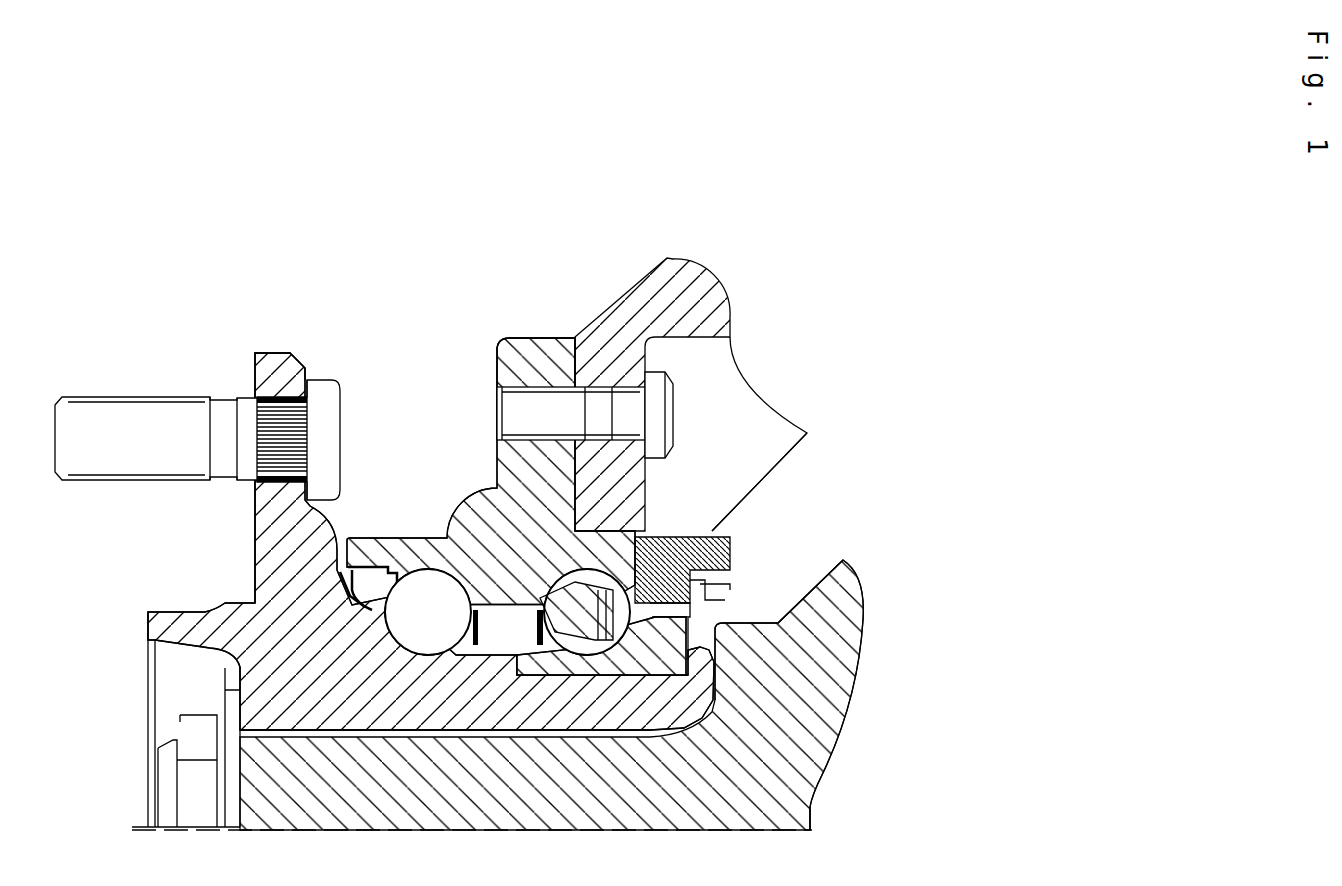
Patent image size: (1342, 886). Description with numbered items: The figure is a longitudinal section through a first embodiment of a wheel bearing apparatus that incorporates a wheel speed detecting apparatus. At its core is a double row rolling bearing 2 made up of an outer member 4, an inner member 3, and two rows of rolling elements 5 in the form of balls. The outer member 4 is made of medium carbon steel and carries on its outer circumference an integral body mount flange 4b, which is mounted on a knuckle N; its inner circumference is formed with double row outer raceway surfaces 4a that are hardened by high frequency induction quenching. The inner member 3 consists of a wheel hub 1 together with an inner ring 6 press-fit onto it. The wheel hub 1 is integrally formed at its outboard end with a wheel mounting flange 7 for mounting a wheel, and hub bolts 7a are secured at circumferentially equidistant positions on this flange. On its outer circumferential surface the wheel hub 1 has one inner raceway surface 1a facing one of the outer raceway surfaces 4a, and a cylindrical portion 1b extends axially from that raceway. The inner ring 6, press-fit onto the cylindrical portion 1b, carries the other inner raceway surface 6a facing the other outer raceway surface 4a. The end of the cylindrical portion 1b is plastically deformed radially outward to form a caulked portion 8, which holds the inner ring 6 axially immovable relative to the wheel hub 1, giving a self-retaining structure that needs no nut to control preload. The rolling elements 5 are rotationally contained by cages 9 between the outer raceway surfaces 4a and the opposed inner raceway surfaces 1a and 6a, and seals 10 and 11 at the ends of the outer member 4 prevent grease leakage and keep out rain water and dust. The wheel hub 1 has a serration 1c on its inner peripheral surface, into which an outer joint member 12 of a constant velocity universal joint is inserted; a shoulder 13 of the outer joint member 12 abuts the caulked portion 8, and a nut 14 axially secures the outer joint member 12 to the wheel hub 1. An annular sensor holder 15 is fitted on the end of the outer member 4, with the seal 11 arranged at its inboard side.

The wheel hub 1 is at (380, 623).
The inner raceway surface 1a is at (410, 625).
The cylindrical portion 1b is at (558, 668).
The serration 1c is at (386, 735).
The double row rolling bearing 2 is at (693, 410).
The inner member 3 is at (335, 719).
The outer member 4 is at (444, 530).
The outer raceway surfaces 4a is at (425, 583).
The body mount flange 4b is at (537, 330).
The rolling elements 5 is at (575, 650).
The inner ring 6 is at (665, 655).
The inner raceway surface 6a is at (600, 648).
The wheel mounting flange 7 is at (287, 378).
The hub bolts 7a is at (138, 415).
The caulked portion 8 is at (815, 804).
The cages 9 is at (540, 583).
The seal 10 is at (355, 575).
The seal 11 is at (740, 585).
The outer joint member 12 is at (835, 628).
The shoulder 13 is at (757, 670).
The nut 14 is at (195, 800).
The sensor holder 15 is at (737, 520).
The knuckle N is at (623, 310).